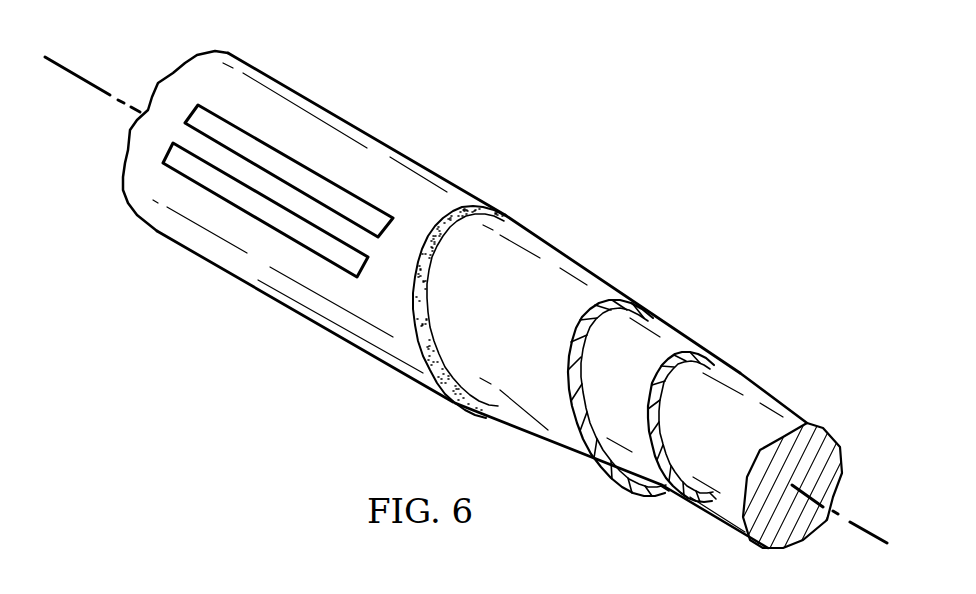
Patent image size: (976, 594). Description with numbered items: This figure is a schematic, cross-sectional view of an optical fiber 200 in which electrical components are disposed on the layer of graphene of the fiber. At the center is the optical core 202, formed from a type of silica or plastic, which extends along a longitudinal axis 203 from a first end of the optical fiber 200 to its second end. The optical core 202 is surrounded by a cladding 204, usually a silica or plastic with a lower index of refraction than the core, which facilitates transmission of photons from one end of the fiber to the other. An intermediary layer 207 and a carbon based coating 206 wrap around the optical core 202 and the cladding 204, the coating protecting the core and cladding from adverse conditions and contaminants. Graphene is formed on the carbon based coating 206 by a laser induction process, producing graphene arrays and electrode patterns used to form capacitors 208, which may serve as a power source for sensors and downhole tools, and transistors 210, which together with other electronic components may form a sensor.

The optical fiber 200 is at (590, 156).
The optical core 202 is at (748, 403).
The longitudinal axis 203 is at (875, 533).
The cladding 204 is at (670, 347).
The carbon based coating 206 is at (270, 95).
The intermediary layer 207 is at (550, 267).
The capacitors 208 is at (303, 233).
The transistors 210 is at (347, 203).